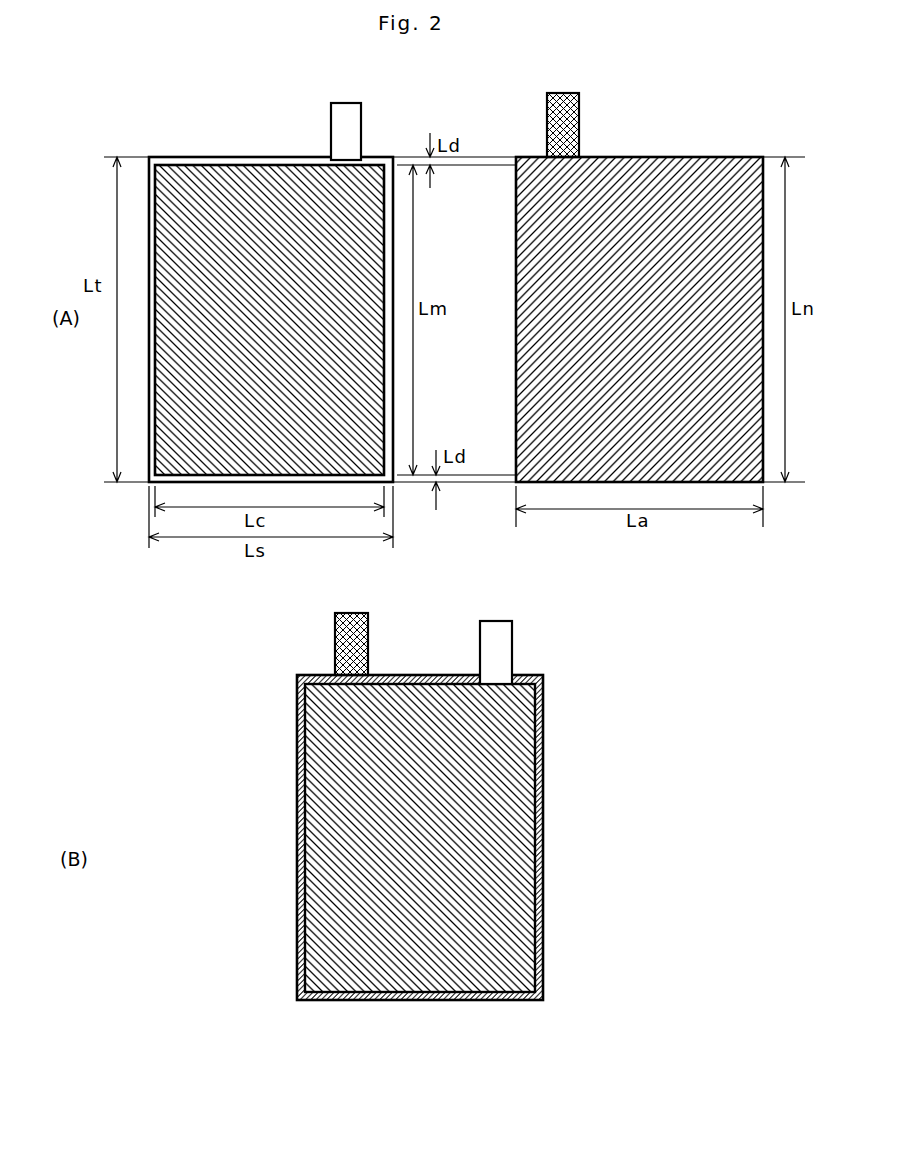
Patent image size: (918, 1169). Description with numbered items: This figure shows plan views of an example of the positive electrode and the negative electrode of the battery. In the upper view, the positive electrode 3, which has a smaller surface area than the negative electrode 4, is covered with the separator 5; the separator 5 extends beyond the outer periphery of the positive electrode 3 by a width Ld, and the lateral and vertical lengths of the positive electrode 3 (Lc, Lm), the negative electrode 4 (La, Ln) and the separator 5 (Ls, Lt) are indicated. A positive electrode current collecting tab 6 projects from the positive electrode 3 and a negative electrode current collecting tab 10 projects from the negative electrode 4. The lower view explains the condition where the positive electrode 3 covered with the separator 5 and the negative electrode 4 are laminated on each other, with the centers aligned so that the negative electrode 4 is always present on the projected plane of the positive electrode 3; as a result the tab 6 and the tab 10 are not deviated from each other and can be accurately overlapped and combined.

The positive electrode 3 is at (237, 186).
The negative electrode 4 is at (677, 170).
The separator 5 is at (278, 158).
The positive electrode current collecting tab 6 is at (358, 127).
The negative electrode current collecting tab 10 is at (580, 116).